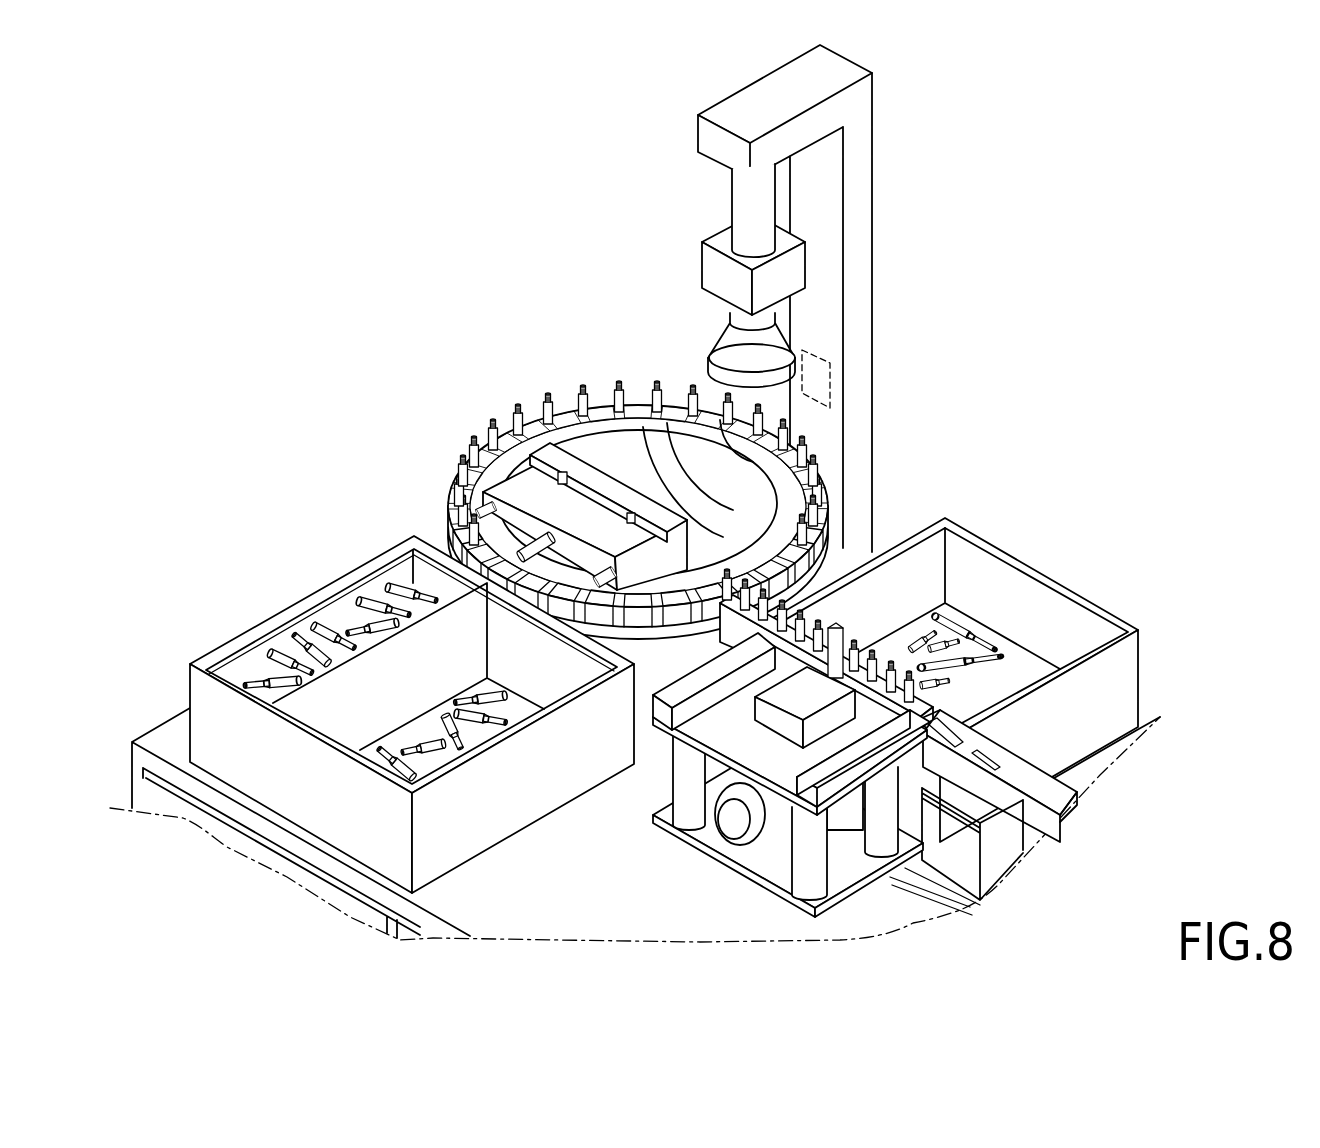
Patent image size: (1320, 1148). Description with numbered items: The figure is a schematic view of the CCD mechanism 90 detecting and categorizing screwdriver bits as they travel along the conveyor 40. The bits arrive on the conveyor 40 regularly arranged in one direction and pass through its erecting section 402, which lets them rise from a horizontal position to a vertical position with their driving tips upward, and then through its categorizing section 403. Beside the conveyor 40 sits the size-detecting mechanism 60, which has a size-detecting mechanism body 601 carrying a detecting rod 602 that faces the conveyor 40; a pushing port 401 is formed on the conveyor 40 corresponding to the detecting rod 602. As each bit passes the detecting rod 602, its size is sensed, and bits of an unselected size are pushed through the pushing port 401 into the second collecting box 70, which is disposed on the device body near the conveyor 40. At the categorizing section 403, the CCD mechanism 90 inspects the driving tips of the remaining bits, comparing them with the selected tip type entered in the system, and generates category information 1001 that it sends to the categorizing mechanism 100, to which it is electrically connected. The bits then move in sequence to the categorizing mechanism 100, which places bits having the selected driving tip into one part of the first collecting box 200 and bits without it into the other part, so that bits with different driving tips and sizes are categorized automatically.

The CCD mechanism 90 is at (898, 278).
The categorizing mechanism 100 is at (638, 461).
The category information 1001 is at (690, 428).
The first collecting box 200 is at (485, 825).
The second collecting box 70 is at (1142, 667).
The conveyor 40 is at (909, 689).
The pushing port 401 is at (863, 658).
The erecting section 402 is at (953, 712).
The categorizing section 403 is at (808, 582).
The size-detecting mechanism 60 is at (785, 791).
The size-detecting mechanism body 601 is at (855, 863).
The detecting rod 602 is at (833, 657).